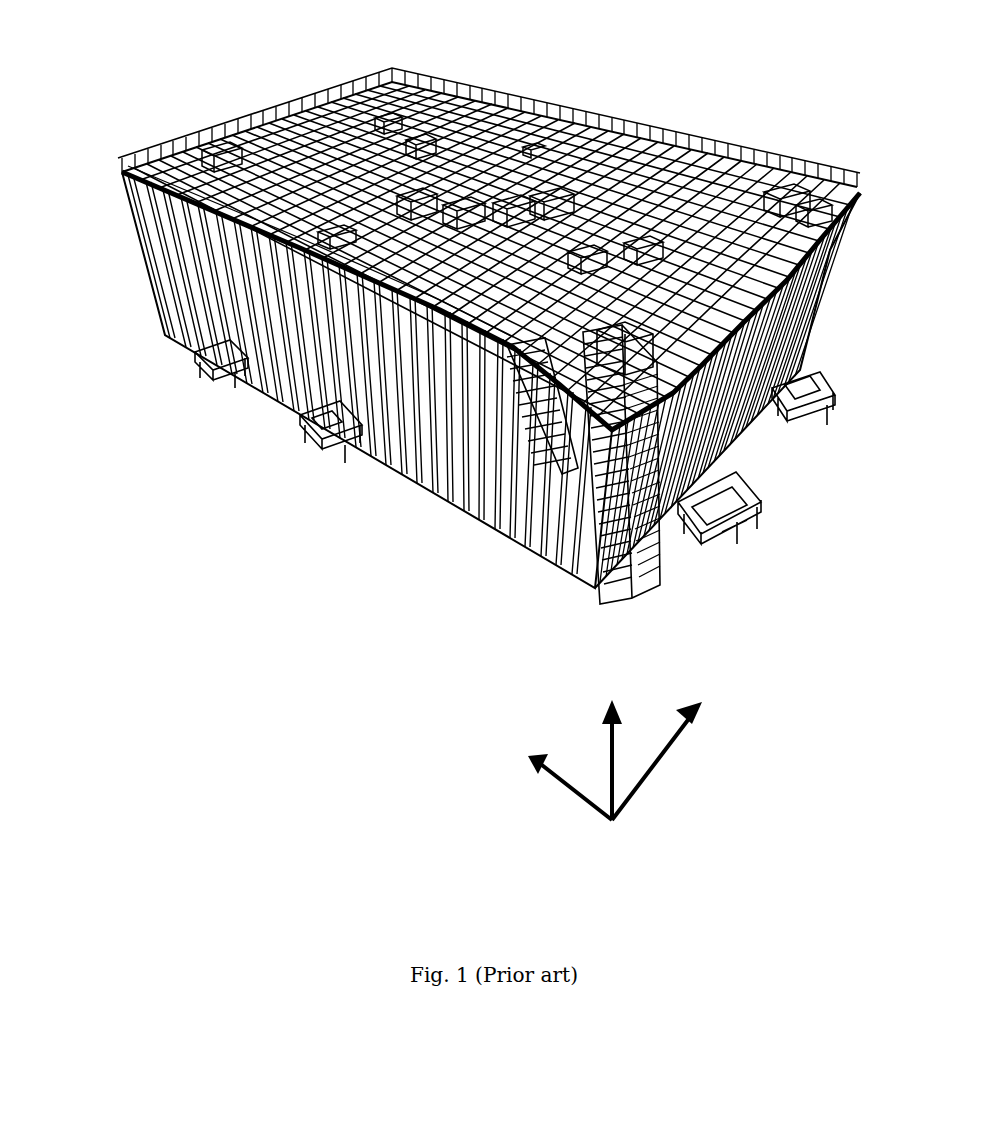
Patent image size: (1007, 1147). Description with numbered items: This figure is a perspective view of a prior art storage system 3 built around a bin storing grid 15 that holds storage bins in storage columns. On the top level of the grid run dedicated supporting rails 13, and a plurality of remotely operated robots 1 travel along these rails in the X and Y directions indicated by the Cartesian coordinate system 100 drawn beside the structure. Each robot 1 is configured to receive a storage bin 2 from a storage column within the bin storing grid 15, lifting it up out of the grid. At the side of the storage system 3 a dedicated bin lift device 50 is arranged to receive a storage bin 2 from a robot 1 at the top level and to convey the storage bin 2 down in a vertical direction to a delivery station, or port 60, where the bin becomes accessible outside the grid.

The robot 1 is at (510, 96).
The storage bin 2 is at (566, 106).
The storage system 3 is at (102, 87).
The supporting rails 13 is at (700, 142).
The bin storing grid 15 is at (110, 283).
The bin lift device 50 is at (310, 366).
The port 60 is at (336, 432).
The Cartesian coordinate system 100 is at (455, 786).